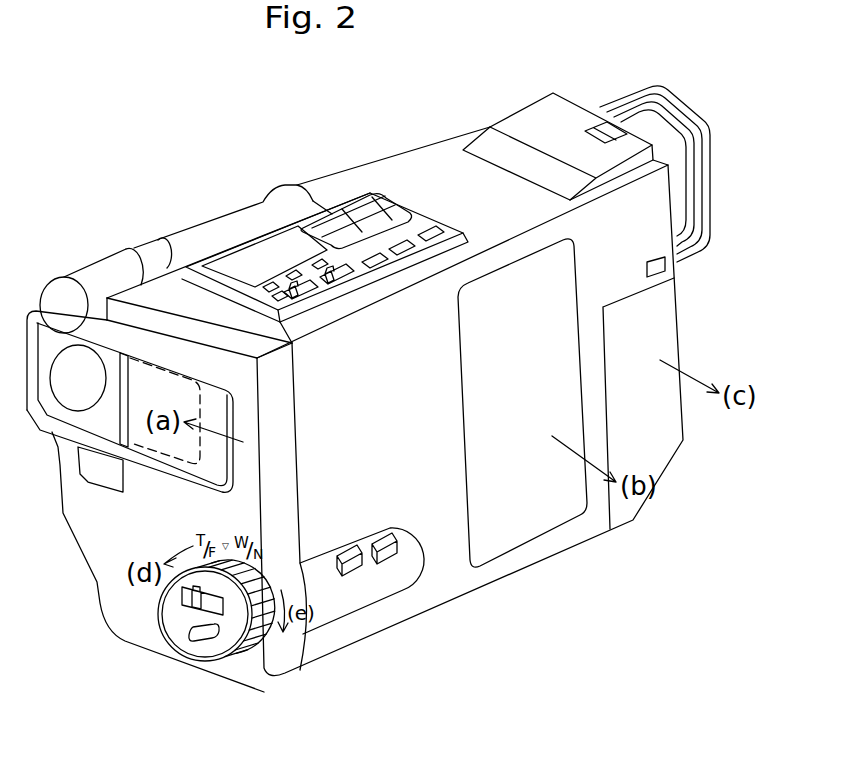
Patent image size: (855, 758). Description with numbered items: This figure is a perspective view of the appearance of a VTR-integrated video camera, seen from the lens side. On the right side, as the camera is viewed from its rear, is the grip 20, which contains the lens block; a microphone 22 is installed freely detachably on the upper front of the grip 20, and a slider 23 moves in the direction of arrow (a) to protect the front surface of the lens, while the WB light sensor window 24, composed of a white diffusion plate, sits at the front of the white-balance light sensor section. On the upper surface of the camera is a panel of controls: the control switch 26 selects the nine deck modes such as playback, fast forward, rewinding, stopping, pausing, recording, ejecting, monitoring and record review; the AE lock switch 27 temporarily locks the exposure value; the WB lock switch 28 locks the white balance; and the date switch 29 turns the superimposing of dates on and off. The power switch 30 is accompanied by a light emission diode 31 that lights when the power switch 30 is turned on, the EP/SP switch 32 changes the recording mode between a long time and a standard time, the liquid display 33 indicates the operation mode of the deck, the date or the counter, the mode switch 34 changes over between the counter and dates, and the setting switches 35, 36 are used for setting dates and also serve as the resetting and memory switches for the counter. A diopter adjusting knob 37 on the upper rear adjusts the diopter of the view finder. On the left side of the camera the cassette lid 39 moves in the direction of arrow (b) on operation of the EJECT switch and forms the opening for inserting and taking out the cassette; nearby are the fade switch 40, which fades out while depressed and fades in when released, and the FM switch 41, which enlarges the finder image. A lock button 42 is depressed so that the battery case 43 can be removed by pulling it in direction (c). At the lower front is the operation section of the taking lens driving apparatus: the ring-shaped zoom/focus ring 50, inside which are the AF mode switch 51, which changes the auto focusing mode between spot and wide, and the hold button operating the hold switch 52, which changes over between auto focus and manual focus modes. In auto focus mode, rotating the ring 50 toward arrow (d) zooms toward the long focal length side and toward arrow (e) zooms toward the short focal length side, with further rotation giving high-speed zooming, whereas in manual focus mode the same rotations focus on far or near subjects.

The grip 20 is at (178, 247).
The microphone 22 is at (57, 288).
The slider 23 is at (153, 435).
The WB light sensor window 24 is at (87, 464).
The control switch 26 is at (352, 212).
The AE lock switch 27 is at (376, 258).
The WB lock switch 28 is at (403, 250).
The date switch 29 is at (438, 240).
The power switch 30 is at (305, 296).
The light emission diode 31 is at (284, 301).
The EP/SP switch 32 is at (343, 274).
The liquid display 33 is at (245, 258).
The mode switch 34 is at (270, 282).
The setting switch 35 is at (294, 272).
The setting switch 36 is at (318, 260).
The diopter adjusting knob 37 is at (593, 125).
The cassette lid 39 is at (517, 527).
The fade switch 40 is at (356, 568).
The FM switch 41 is at (391, 556).
The lock button 42 is at (662, 268).
The battery case 43 is at (670, 440).
The zoom/focus ring 50 is at (278, 645).
The AF mode switch 51 is at (185, 597).
The hold switch 52 is at (201, 636).